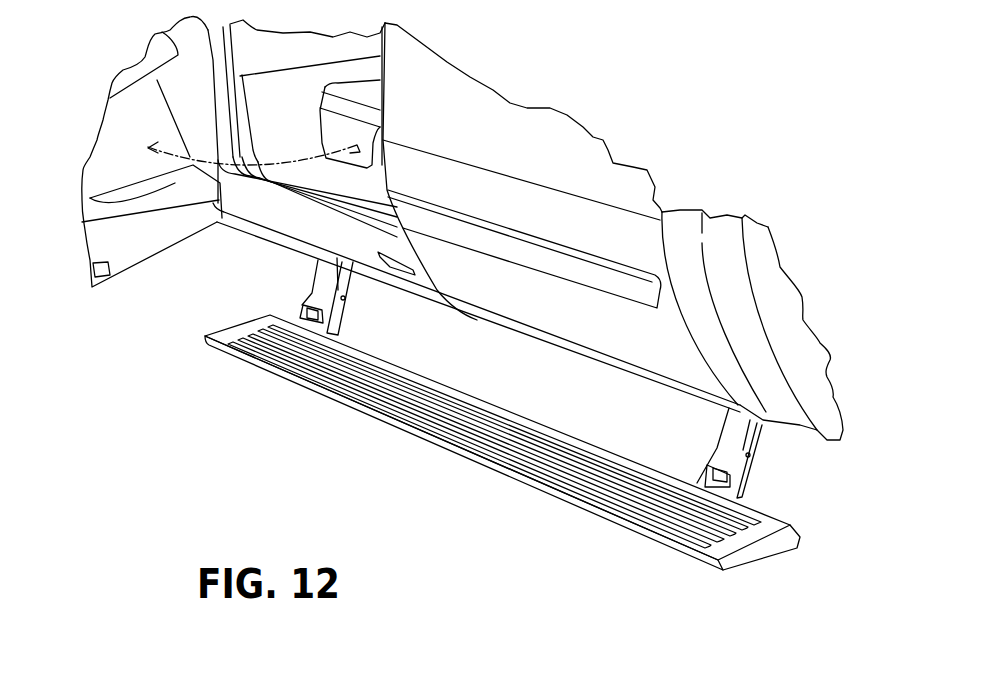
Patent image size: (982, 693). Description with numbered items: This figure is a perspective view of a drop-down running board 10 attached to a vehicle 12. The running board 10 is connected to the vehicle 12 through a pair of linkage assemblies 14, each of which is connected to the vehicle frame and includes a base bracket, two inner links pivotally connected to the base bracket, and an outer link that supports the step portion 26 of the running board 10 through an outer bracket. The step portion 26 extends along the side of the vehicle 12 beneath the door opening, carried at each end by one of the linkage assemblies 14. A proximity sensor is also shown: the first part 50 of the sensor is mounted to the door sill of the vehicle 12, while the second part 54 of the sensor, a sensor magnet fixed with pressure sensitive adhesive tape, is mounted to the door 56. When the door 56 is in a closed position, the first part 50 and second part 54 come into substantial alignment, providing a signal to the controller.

The drop-down running board 10 is at (505, 414).
The vehicle 12 is at (627, 222).
The linkage assemblies 14 is at (352, 328).
The step portion 26 is at (503, 467).
The first part of a sensor 50 is at (403, 262).
The second part of the sensor 54 is at (108, 275).
The door 56 is at (112, 175).